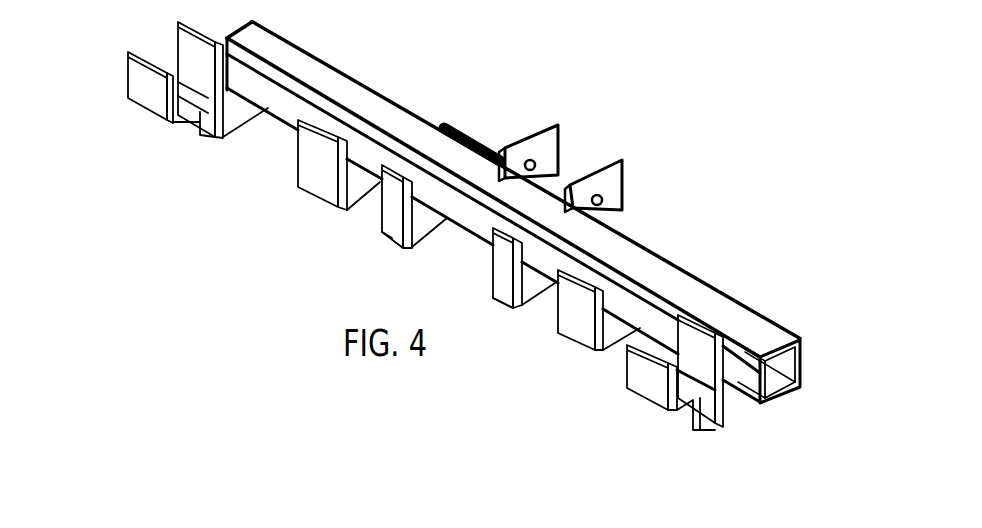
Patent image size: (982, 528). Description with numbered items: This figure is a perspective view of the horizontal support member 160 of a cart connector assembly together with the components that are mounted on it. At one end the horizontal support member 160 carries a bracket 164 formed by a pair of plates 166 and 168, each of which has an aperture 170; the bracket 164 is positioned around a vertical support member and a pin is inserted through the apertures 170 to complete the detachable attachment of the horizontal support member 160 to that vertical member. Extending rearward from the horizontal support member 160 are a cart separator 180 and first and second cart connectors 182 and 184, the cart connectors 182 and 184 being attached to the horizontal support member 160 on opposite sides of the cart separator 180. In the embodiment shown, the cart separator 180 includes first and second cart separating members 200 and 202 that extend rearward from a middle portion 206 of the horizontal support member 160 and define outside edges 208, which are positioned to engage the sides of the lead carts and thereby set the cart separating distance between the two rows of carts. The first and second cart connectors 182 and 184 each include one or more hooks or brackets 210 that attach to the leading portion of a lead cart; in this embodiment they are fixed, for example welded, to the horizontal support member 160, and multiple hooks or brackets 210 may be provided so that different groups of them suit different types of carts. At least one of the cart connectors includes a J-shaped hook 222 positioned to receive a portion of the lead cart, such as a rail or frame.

The horizontal support member 160 is at (735, 320).
The bracket 164 is at (624, 190).
The plate 166 is at (558, 127).
The plate 168 is at (622, 163).
The aperture 170 is at (537, 163).
The cart separator 180 is at (362, 252).
The first cart connector 182 is at (180, 150).
The second cart connector 184 is at (632, 421).
The first cart separating member 200 is at (378, 210).
The second cart separating member 202 is at (498, 305).
The middle portion 206 is at (505, 192).
The outside edge 208 is at (380, 198).
The hook or bracket 210 is at (128, 72).
The J-shaped hook 222 is at (305, 153).